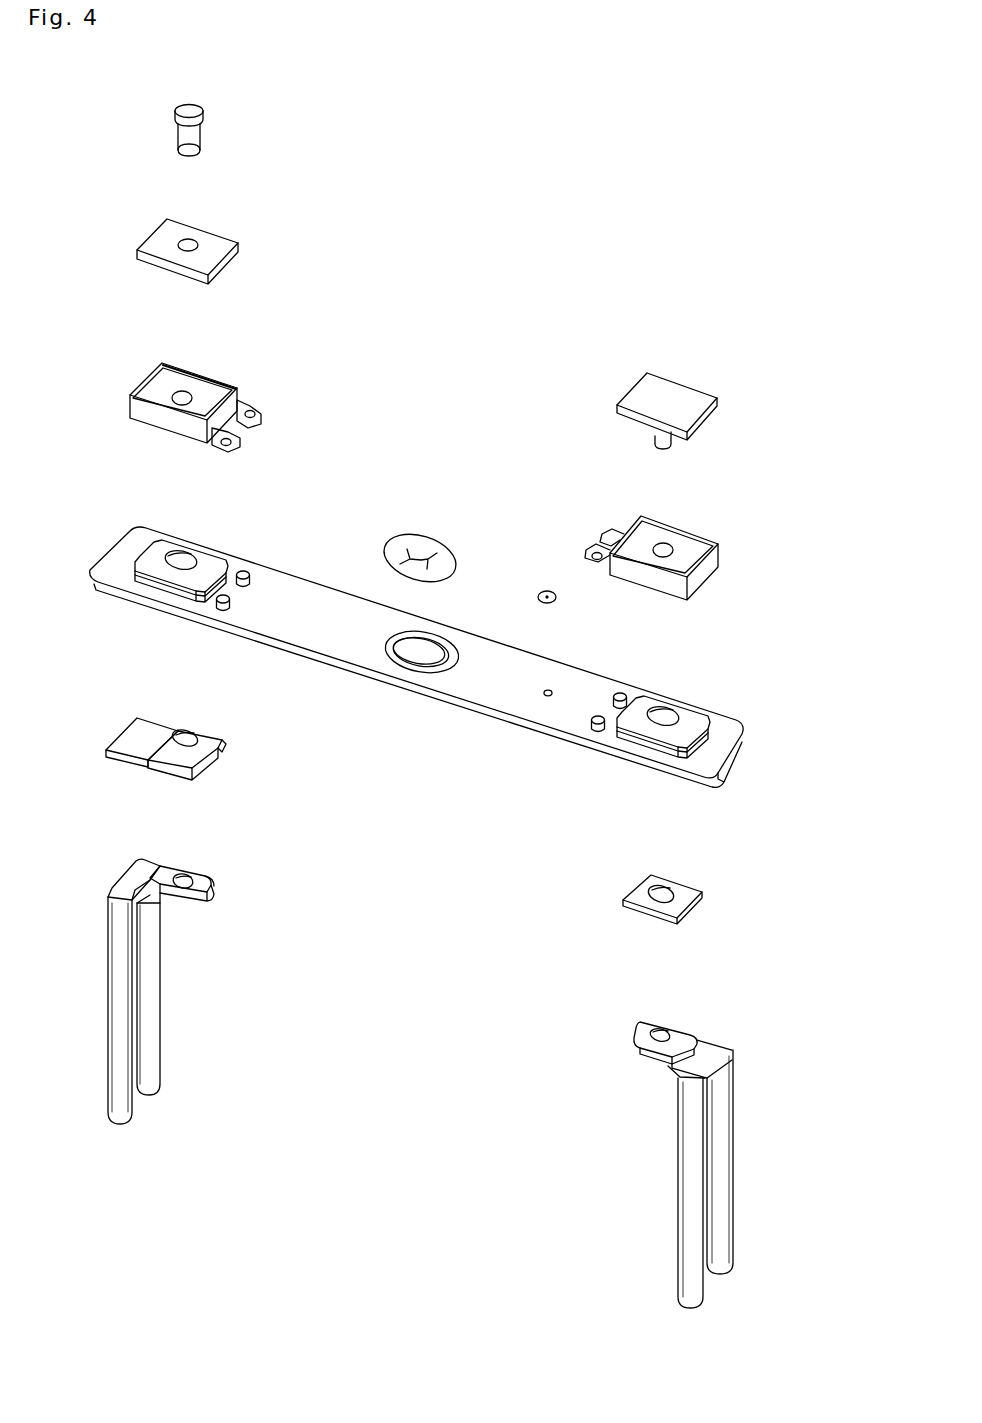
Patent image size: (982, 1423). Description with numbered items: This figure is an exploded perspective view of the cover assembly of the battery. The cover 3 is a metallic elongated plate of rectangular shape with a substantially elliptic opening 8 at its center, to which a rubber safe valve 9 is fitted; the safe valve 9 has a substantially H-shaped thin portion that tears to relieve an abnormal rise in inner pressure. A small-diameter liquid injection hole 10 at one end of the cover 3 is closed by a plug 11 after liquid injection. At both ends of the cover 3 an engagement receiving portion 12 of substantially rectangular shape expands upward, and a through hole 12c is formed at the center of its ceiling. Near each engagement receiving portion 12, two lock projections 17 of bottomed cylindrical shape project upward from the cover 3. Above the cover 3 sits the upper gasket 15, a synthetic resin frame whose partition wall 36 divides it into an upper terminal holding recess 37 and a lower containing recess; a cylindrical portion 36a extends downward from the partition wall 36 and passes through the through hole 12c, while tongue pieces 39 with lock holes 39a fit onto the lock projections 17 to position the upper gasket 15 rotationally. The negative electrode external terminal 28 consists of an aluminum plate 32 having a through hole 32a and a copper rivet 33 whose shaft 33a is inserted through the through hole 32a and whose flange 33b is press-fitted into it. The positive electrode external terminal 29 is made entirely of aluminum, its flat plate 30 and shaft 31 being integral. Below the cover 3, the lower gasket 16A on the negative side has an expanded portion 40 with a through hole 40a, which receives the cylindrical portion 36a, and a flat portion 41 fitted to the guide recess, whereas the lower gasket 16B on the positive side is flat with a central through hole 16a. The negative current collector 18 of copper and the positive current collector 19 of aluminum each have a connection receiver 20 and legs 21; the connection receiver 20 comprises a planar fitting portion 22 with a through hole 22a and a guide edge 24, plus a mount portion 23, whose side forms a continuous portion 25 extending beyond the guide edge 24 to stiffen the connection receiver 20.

The cover 3 is at (305, 600).
The opening 8 is at (428, 648).
The safe valve 9 is at (426, 542).
The liquid injection hole 10 is at (549, 690).
The plug 11 is at (546, 591).
The engagement receiving portion 12 is at (162, 560).
The through hole 12c is at (184, 556).
The upper gasket 15 is at (240, 398).
The lower gasket on the negative electrode side 16A is at (224, 737).
The lower gasket on the positive electrode side 16B is at (630, 892).
The through hole 16a is at (661, 888).
The lock projection 17 is at (245, 574).
The negative current collector 18 is at (203, 981).
The positive current collector 19 is at (654, 1146).
The connection receiver 20 is at (208, 878).
The leg 21 is at (112, 985).
The fitting portion 22 is at (165, 867).
The through hole 22a is at (184, 878).
The mount portion 23 is at (130, 876).
The guide edge 24 is at (205, 894).
The continuous portion 25 is at (162, 905).
The negative electrode external terminal 28 is at (366, 127).
The positive electrode external terminal 29 is at (518, 390).
The flat plate 30 is at (625, 405).
The shaft 31 is at (655, 446).
The aluminum plate 32 is at (240, 236).
The through hole 32a is at (187, 240).
The rivet 33 is at (312, 106).
The shaft 33a is at (199, 134).
The flange 33b is at (204, 111).
The partition wall 36 is at (150, 395).
The cylindrical portion 36a is at (182, 390).
The terminal holding recess 37 is at (205, 377).
The tongue piece 39 is at (258, 422).
The lock hole 39a is at (250, 414).
The expanded portion 40 is at (178, 720).
The through hole 40a is at (185, 734).
The flat portion 41 is at (120, 740).